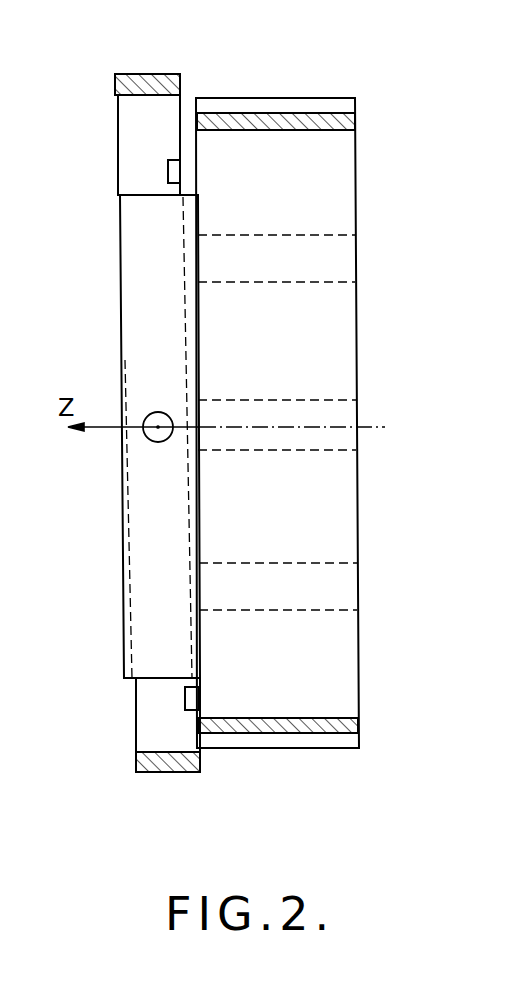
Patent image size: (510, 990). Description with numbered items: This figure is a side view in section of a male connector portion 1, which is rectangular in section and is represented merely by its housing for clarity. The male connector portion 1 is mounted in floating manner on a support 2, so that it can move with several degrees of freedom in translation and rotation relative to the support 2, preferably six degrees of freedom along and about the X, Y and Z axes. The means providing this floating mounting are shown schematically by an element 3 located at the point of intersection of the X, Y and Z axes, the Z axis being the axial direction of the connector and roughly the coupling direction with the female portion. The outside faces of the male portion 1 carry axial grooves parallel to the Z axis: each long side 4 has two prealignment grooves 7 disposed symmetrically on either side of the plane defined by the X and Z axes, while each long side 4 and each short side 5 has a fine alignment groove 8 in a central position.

The male connector portion 1 is at (330, 166).
The support 2 is at (110, 94).
The element 3 is at (147, 438).
The long side 4 is at (337, 330).
The short side 5 is at (289, 118).
The prealignment groove 7 is at (368, 398).
The fine alignment groove 8 is at (327, 105).